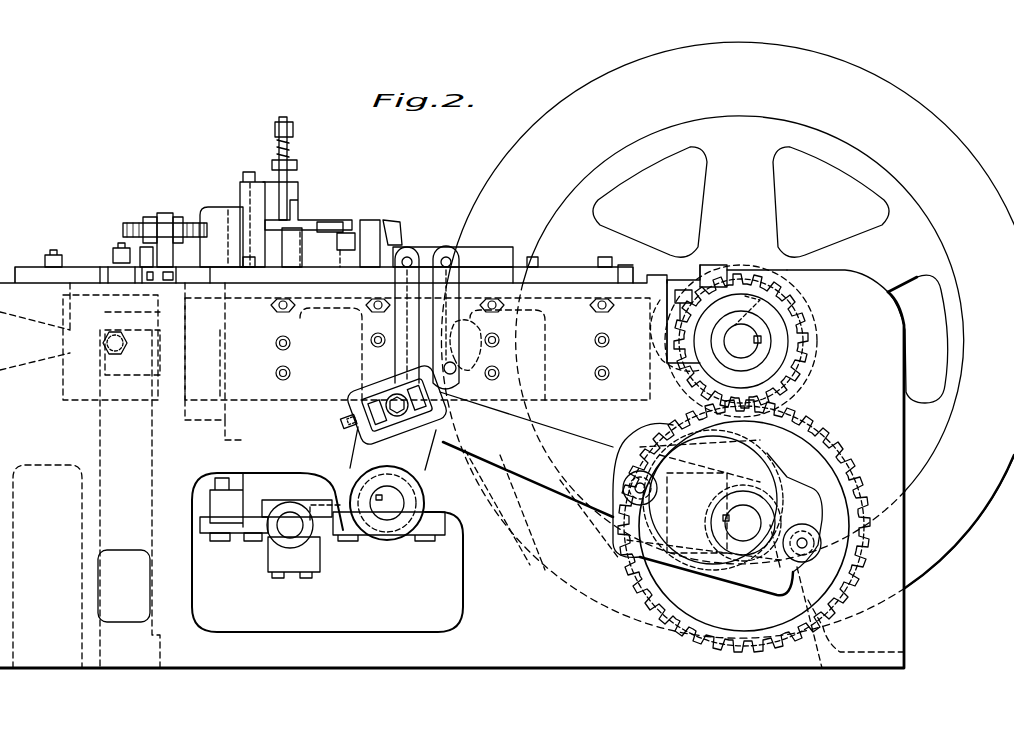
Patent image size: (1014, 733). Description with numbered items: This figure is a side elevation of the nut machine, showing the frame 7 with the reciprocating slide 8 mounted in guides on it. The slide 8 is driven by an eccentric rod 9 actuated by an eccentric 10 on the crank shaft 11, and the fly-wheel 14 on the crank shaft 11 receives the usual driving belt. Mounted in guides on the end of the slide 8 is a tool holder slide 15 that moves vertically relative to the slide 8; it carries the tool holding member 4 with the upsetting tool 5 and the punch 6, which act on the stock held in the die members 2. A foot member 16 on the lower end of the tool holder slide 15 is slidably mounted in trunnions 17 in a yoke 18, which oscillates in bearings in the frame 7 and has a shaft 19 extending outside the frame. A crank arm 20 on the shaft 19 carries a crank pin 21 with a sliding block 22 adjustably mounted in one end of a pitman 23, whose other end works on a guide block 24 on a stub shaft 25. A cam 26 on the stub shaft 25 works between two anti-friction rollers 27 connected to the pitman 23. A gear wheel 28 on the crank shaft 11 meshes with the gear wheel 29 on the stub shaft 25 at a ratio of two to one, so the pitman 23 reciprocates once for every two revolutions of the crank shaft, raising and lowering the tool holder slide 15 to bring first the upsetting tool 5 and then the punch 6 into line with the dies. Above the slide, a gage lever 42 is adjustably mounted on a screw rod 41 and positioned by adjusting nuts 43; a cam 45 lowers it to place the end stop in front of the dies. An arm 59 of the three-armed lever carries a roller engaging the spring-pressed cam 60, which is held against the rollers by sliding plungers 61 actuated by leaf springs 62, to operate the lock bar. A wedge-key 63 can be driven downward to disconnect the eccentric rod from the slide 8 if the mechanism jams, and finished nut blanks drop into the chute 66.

The die members 2 is at (148, 330).
The tool holding member 4 is at (216, 420).
The upsetting tool 5 is at (153, 333).
The punch 6 is at (143, 392).
The frame 7 is at (453, 466).
The reciprocating slide 8 is at (348, 308).
The eccentric rod 9 is at (674, 263).
The eccentric 10 is at (708, 318).
The crank shaft 11 is at (760, 345).
The fly-wheel 14 is at (727, 340).
The tool holder slide 15 is at (256, 482).
The foot member 16 is at (242, 533).
The trunnions 17 is at (297, 539).
The yoke 18 is at (323, 498).
The shaft 19 is at (389, 503).
The crank arm 20 is at (365, 440).
The crank pin 21 is at (396, 418).
The sliding block 22 is at (365, 420).
The pitman 23 is at (631, 482).
The guide block 24 is at (780, 497).
The stub shaft 25 is at (743, 523).
The cam 26 is at (705, 568).
The anti-friction rollers 27 is at (624, 481).
The gear wheel 28 is at (790, 362).
The gear wheel 29 is at (828, 440).
The screw rod 41 is at (165, 222).
The gage lever 42 is at (170, 252).
The adjusting nuts 43 is at (173, 218).
The cam 45 is at (140, 253).
The arm 59 is at (290, 192).
The spring-pressed cam 60 is at (483, 266).
The sliding plungers 61 is at (447, 251).
The leaf springs 62 is at (415, 297).
The wedge-key 63 is at (392, 225).
The chute 66 is at (124, 586).